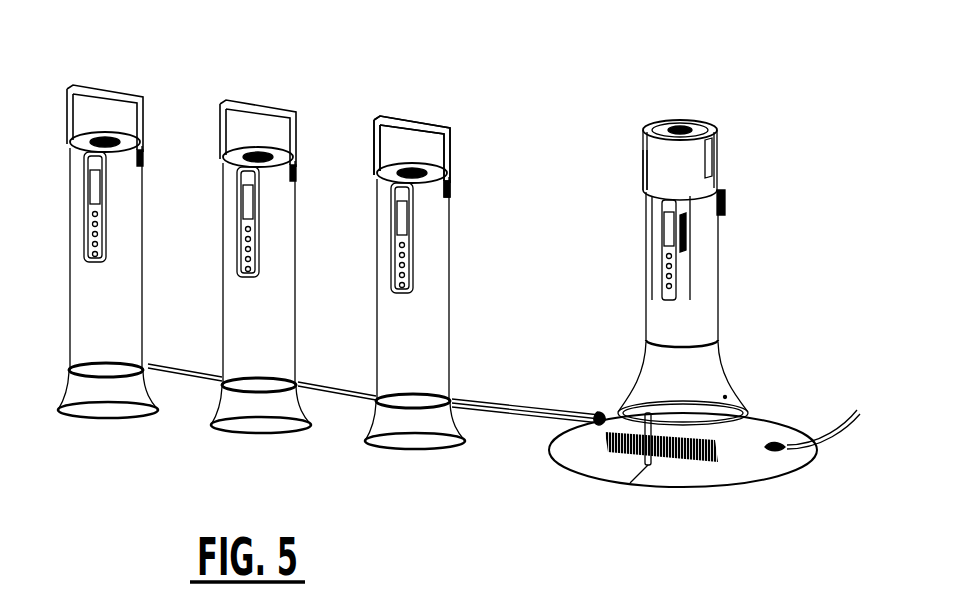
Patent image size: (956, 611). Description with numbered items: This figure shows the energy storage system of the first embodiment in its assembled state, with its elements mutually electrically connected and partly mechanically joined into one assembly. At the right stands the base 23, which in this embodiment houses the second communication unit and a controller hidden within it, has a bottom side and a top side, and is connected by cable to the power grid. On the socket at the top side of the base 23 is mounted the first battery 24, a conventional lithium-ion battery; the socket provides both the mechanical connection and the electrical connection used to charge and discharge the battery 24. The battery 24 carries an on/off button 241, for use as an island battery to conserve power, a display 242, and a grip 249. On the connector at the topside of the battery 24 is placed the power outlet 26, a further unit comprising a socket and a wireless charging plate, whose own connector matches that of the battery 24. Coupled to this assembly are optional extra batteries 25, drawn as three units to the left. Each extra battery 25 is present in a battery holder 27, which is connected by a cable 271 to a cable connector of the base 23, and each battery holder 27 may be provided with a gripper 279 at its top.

The base 23 is at (733, 375).
The first battery 24 is at (722, 245).
The extra battery 25 is at (280, 225).
The power outlet 26 is at (720, 165).
The battery holder 27 is at (408, 453).
The on/off button 241 is at (400, 267).
The display 242 is at (400, 222).
The grip 249 is at (637, 164).
The cable 271 is at (510, 405).
The gripper 279 is at (418, 127).